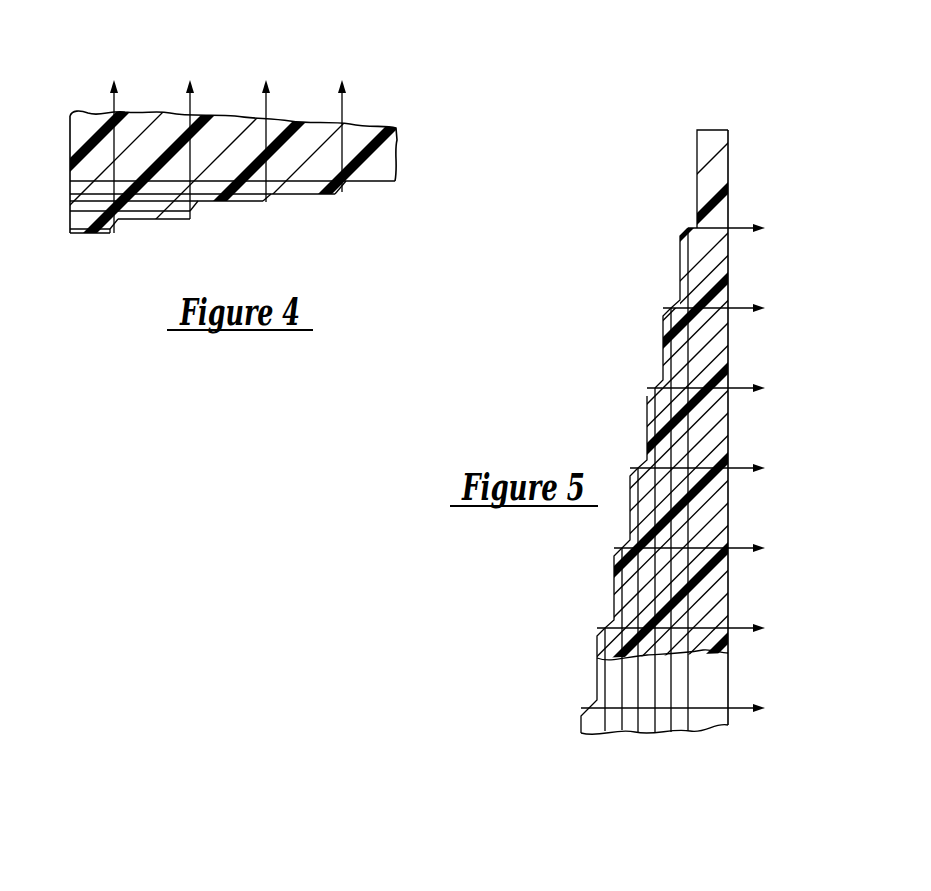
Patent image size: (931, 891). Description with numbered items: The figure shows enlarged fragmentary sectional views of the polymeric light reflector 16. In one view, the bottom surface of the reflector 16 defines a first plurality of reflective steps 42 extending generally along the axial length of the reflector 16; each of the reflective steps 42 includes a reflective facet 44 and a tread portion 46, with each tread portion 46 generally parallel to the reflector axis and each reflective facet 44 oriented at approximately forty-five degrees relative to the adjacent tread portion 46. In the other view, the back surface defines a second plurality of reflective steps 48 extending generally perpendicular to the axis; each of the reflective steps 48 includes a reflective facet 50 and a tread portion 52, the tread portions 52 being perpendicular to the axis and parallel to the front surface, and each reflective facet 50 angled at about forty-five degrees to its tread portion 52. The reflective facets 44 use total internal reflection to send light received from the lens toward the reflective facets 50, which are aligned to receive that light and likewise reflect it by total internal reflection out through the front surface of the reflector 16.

In FIG. 4, the reflector 16 is at (401, 86).
In FIG. 5, the reflector 16 is at (618, 172).
In FIG. 4, the first plurality of reflective steps 42 is at (96, 245).
In FIG. 4, the reflective facet 44 is at (188, 207).
In FIG. 4, the tread portion 46 is at (141, 220).
In FIG. 5, the second plurality of reflective steps 48 is at (683, 174).
In FIG. 5, the reflective facet 50 is at (690, 229).
In FIG. 5, the tread portion 52 is at (679, 262).